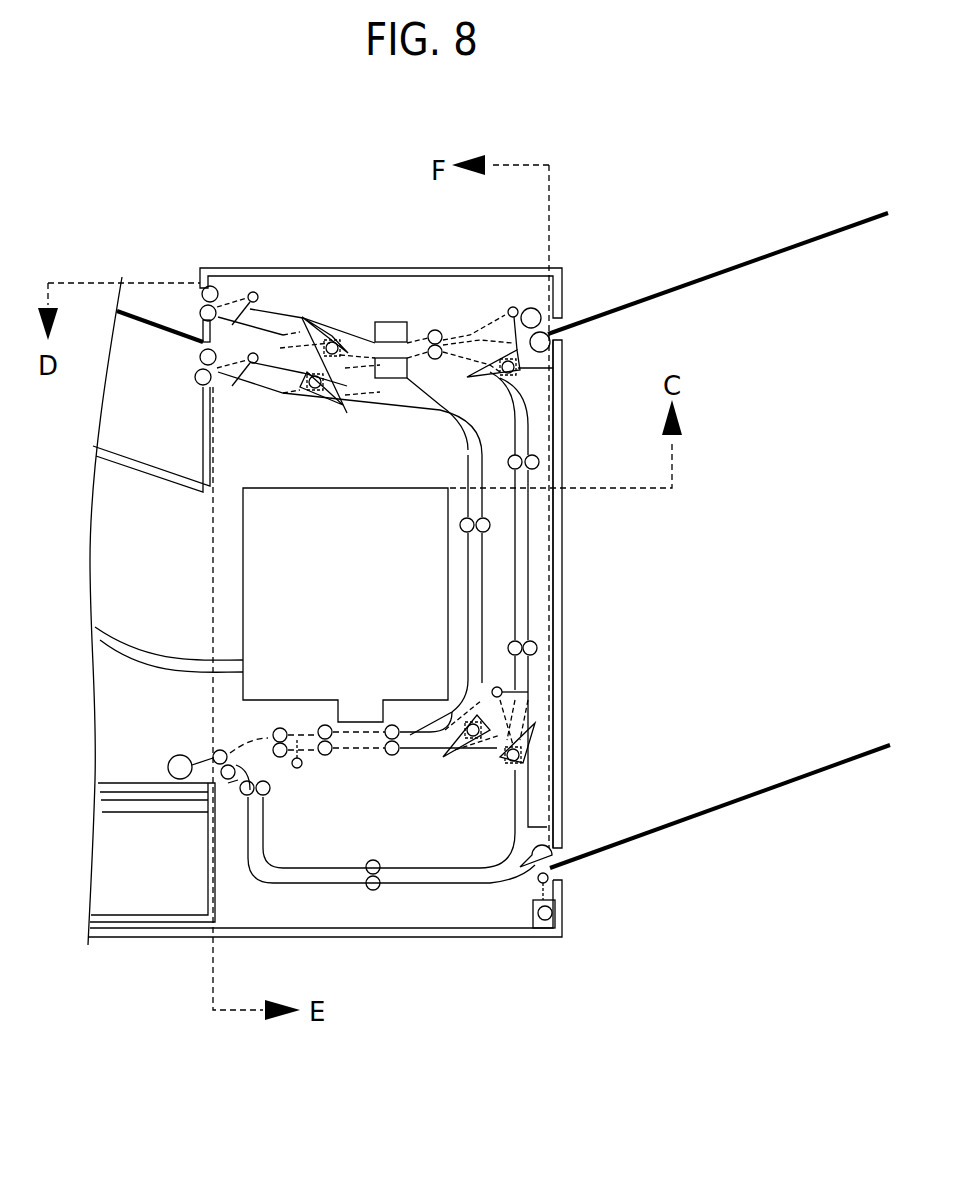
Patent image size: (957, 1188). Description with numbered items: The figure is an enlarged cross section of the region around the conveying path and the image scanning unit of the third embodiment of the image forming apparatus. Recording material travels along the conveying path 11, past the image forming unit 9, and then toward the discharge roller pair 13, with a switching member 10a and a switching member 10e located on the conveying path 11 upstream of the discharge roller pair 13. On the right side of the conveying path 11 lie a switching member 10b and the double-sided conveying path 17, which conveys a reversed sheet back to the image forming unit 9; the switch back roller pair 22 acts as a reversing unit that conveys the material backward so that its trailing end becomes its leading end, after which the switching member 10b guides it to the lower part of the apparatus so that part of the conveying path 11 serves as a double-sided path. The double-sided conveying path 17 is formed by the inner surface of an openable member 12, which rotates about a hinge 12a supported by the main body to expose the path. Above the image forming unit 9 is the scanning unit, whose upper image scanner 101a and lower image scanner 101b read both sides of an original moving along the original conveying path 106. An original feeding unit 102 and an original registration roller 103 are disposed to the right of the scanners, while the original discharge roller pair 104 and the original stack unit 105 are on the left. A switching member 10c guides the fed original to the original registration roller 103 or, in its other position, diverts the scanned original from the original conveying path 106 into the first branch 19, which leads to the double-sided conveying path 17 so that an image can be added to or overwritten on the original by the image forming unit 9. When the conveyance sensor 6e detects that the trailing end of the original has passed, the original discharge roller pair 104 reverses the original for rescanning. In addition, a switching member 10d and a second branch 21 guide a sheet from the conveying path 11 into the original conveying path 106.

The original discharge roller pair 104 is at (205, 305).
The original stack unit 105 is at (183, 337).
The conveyance sensor 6e is at (250, 292).
The original conveying path 106 is at (272, 312).
The discharge roller pair 13 is at (198, 383).
The second branch 21 is at (307, 357).
The switching member 10e is at (333, 347).
The switching member 10d is at (313, 390).
The upper image scanner 101a is at (393, 322).
The lower image scanner 101b is at (393, 378).
The original registration roller 103 is at (433, 330).
The original feeding unit 102 is at (547, 323).
The switching member 10c is at (520, 370).
The first branch 19 is at (520, 425).
The double-sided conveying path 17 is at (530, 537).
The conveying path 11 is at (480, 593).
The openable member 12 is at (560, 637).
The switch back roller pair 22 is at (530, 648).
The switching member 10b is at (527, 747).
The switching member 10a is at (443, 760).
The image forming unit 9 is at (260, 503).
The hinge 12a is at (555, 913).